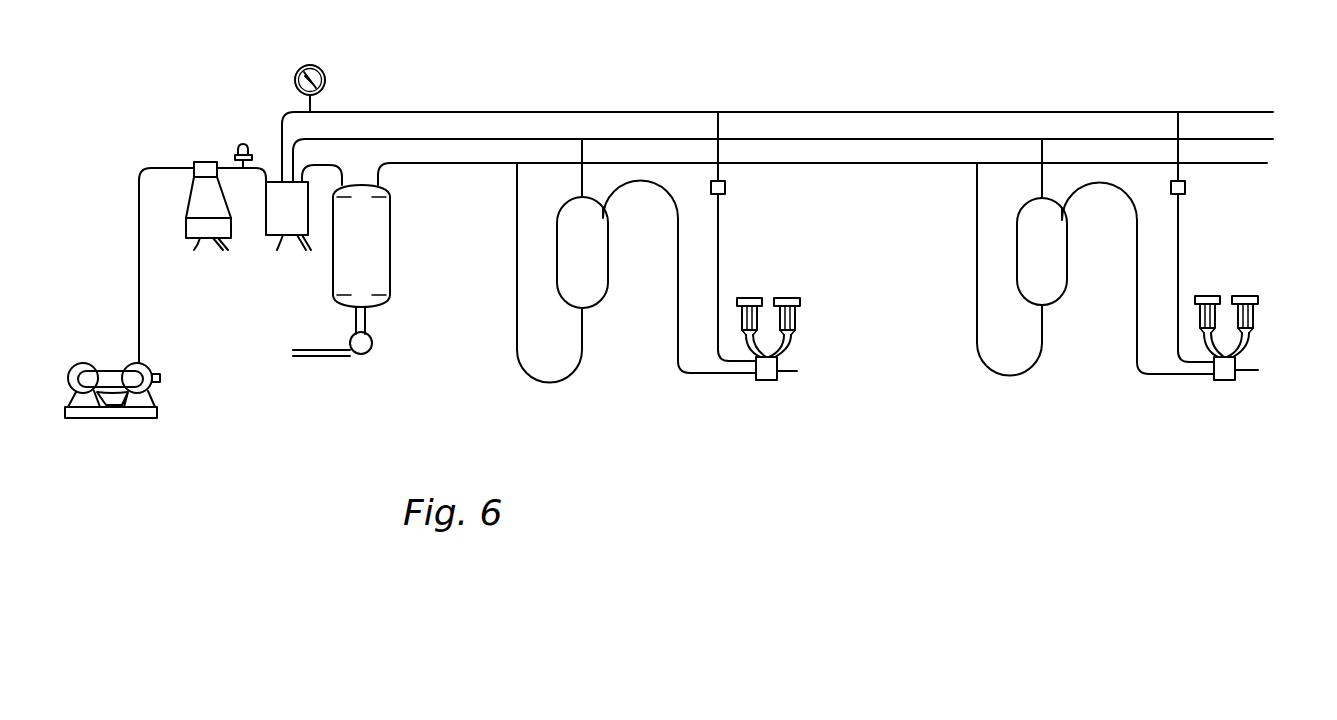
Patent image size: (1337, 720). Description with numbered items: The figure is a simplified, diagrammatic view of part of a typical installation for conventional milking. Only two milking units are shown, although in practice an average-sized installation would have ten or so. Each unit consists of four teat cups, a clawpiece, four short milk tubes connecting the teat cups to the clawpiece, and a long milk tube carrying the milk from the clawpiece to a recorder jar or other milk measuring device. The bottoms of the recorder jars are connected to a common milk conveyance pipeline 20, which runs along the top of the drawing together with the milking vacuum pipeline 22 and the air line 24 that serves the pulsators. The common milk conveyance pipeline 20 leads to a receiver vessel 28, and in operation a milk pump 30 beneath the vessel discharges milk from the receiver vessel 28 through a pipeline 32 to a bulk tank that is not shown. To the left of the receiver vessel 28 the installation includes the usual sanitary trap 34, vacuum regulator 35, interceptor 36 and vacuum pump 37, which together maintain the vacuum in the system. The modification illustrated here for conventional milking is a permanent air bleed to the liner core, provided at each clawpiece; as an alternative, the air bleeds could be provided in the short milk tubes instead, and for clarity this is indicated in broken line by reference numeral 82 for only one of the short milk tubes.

The common milk conveyance pipeline 20 is at (457, 167).
The milking vacuum pipeline 22 is at (1242, 138).
The air line 24 is at (826, 111).
The receiver vessel 28 is at (390, 275).
The milk pump 30 is at (375, 347).
The pipeline 32 is at (325, 358).
The sanitary trap 34 is at (283, 237).
The vacuum regulator 35 is at (243, 143).
The interceptor 36 is at (203, 235).
The vacuum pump 37 is at (112, 376).
The air bleed in short milk tube 82 is at (1248, 342).